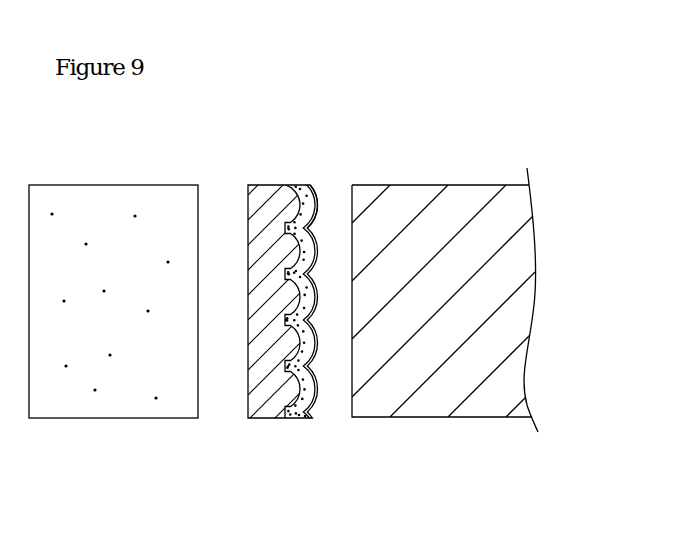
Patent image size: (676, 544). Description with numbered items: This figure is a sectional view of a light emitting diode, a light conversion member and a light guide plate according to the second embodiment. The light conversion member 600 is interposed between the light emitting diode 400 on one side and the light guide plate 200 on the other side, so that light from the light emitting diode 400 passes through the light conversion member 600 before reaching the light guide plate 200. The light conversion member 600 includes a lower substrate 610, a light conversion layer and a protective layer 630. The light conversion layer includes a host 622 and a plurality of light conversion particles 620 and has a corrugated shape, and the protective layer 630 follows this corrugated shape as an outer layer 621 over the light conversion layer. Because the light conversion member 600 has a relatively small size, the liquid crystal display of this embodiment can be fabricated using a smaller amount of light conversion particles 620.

The light guide plate 200 is at (437, 407).
The light emitting diode 400 is at (108, 409).
The light conversion member 600 is at (291, 302).
The base layer 610 is at (255, 389).
The light conversion particles 620 is at (308, 337).
The coating layer 621 is at (326, 323).
The pattern body 622 is at (288, 414).
The protective layer 630 is at (317, 201).